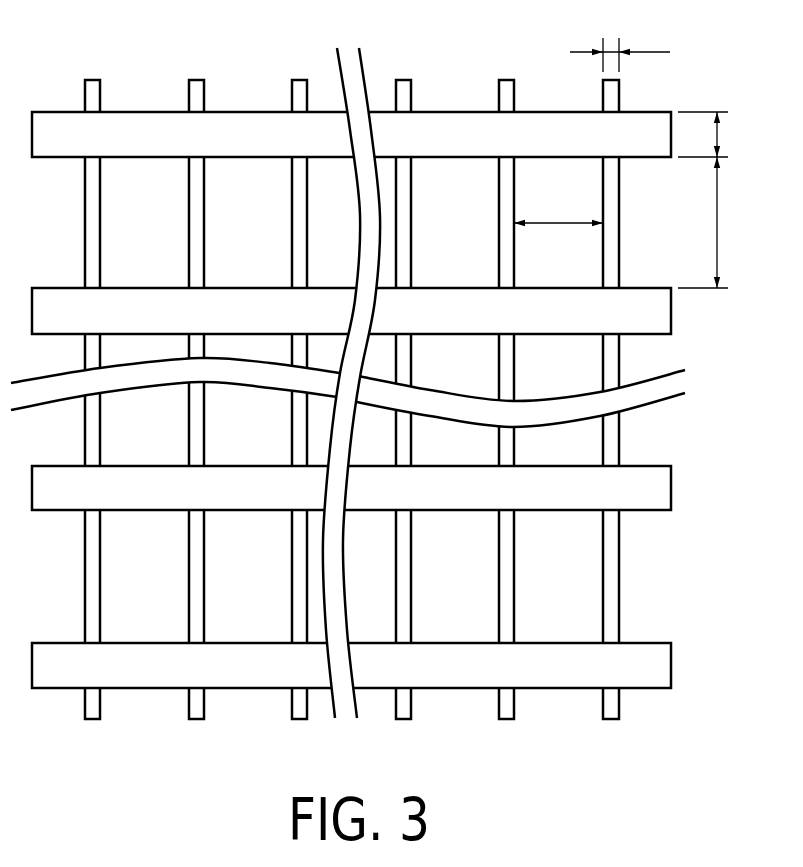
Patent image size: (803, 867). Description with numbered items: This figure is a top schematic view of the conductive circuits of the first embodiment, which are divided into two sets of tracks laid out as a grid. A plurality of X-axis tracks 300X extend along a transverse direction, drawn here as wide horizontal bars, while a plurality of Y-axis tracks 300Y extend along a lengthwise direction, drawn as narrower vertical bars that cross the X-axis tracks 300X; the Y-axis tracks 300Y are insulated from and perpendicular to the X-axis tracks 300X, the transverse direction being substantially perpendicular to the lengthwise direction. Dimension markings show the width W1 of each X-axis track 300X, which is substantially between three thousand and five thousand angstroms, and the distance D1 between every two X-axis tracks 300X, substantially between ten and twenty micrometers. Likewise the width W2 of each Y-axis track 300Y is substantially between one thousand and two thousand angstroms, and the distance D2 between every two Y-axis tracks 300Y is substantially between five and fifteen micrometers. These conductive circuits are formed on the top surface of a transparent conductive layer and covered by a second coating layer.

The X-axis tracks 300X is at (453, 130).
The Y-axis tracks 300Y is at (610, 97).
The width of each X-axis track W1 is at (703, 134).
The width of each Y-axis track W2 is at (621, 46).
The distance between every two X-axis tracks D1 is at (703, 222).
The distance between every two Y-axis tracks D2 is at (558, 210).